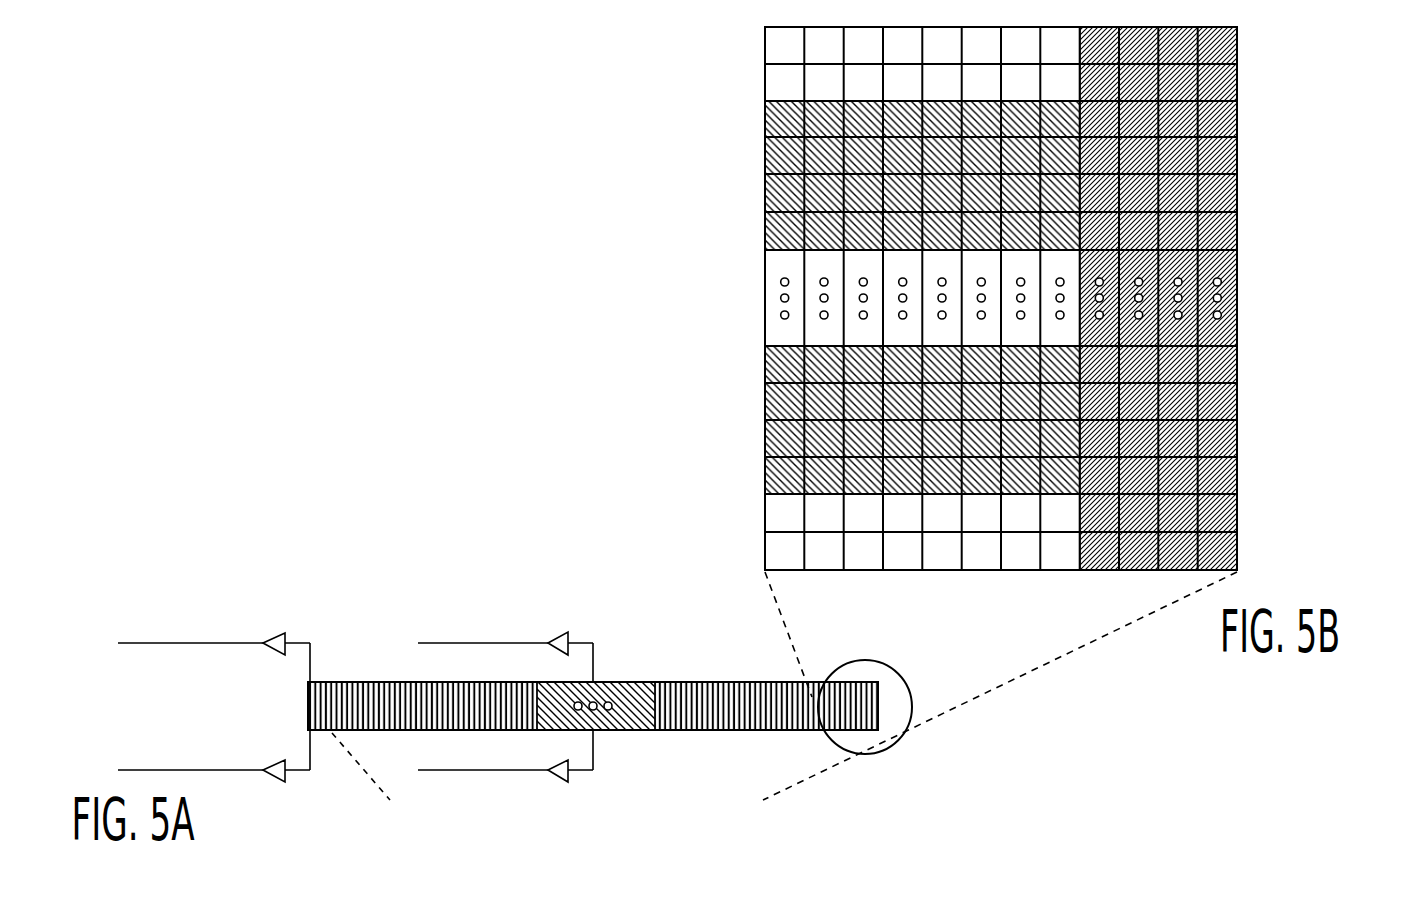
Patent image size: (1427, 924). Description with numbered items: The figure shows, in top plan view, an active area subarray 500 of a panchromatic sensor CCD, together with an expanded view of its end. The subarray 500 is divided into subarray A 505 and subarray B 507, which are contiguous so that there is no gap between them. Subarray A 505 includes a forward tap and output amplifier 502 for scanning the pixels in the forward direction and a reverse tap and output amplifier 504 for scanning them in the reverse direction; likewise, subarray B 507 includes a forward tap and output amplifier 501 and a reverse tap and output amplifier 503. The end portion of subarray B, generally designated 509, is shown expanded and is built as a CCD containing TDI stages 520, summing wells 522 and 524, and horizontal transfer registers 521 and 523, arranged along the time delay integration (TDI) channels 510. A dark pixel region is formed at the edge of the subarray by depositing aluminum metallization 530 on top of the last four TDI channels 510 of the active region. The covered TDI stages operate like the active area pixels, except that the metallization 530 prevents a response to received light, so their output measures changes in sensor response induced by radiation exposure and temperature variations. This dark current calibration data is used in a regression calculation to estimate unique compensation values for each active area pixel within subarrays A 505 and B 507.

In FIG. 5A, the active area subarray 500 is at (518, 695).
In FIG. 5A, the forward tap and output amplifier 501 is at (548, 774).
In FIG. 5A, the forward tap and output amplifier 502 is at (281, 761).
In FIG. 5A, the reverse tap and output amplifier 503 is at (548, 640).
In FIG. 5A, the reverse tap and output amplifier 504 is at (281, 634).
In FIG. 5A, the subarray A 505 is at (381, 796).
In FIG. 5A, the subarray B 507 is at (665, 827).
In FIG. 5B, the end portion of subarray B 509 is at (926, 298).
In FIG. 5A, the end portion of subarray B 509 is at (877, 752).
In FIG. 5B, the time delay integration (TDI) channels 510 is at (1208, 572).
In FIG. 5B, the TDI stages 520 is at (765, 477).
In FIG. 5B, the horizontal transfer register 521 is at (765, 538).
In FIG. 5B, the summing well 522 is at (765, 503).
In FIG. 5B, the horizontal transfer register 523 is at (765, 45).
In FIG. 5B, the summing well 524 is at (765, 85).
In FIG. 5B, the aluminum metallization 530 is at (1187, 368).